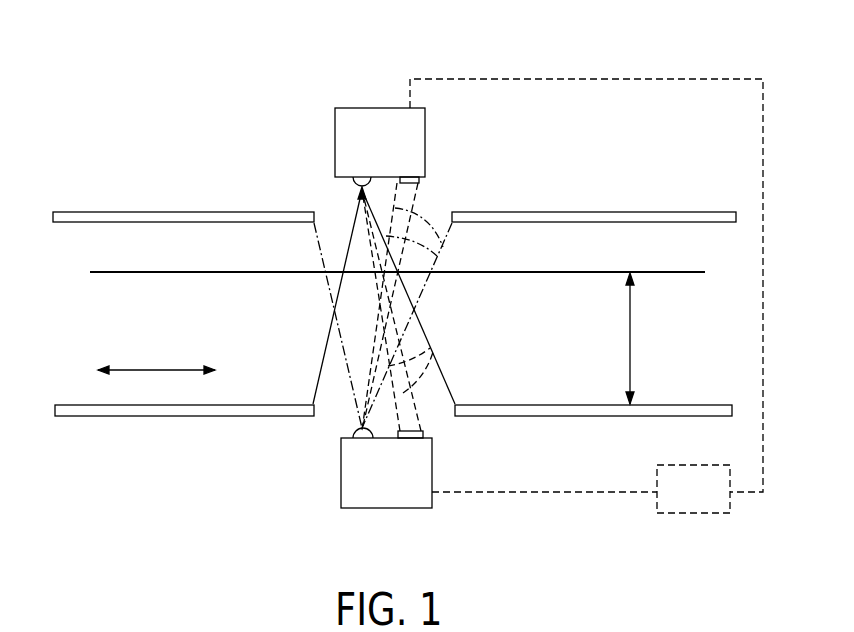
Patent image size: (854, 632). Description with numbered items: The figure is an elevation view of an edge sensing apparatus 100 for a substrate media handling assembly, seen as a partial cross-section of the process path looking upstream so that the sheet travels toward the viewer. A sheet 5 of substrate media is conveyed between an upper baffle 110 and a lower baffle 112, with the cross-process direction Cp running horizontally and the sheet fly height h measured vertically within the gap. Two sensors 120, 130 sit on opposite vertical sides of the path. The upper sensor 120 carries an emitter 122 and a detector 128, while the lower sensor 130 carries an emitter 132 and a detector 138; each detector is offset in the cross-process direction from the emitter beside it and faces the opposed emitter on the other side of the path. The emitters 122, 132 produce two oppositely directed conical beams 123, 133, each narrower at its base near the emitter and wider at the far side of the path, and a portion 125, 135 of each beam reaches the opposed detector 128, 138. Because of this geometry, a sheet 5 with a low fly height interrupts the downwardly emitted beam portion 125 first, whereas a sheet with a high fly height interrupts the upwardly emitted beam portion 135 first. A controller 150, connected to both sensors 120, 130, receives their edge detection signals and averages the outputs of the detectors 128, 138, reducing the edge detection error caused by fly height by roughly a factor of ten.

The edge sensing apparatus 100 is at (92, 66).
The upper baffle 110 is at (122, 212).
The lower baffle 112 is at (108, 416).
The sheet 5 is at (118, 272).
The sensor 120 is at (360, 108).
The emitter 122 is at (352, 181).
The detector 128 is at (421, 181).
The sensor 130 is at (410, 508).
The emitter 132 is at (355, 432).
The detector 138 is at (424, 434).
The conical beam 123 is at (318, 373).
The conical beam 133 is at (320, 290).
The detected beam portion 135 is at (442, 255).
The detected beam portion 125 is at (430, 348).
The controller 150 is at (706, 503).